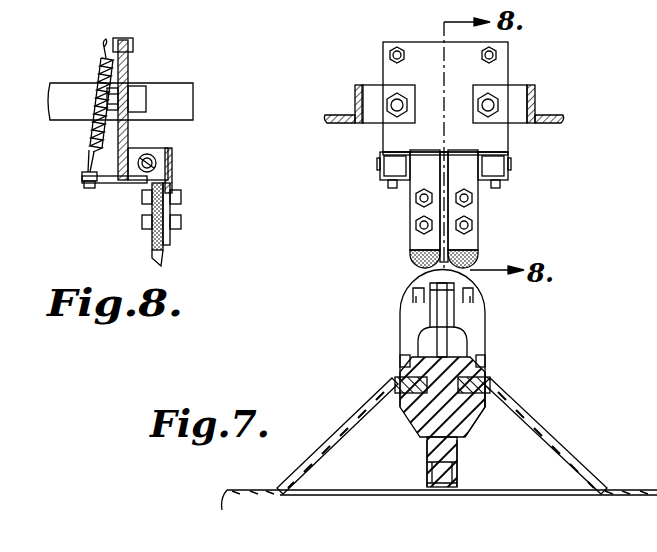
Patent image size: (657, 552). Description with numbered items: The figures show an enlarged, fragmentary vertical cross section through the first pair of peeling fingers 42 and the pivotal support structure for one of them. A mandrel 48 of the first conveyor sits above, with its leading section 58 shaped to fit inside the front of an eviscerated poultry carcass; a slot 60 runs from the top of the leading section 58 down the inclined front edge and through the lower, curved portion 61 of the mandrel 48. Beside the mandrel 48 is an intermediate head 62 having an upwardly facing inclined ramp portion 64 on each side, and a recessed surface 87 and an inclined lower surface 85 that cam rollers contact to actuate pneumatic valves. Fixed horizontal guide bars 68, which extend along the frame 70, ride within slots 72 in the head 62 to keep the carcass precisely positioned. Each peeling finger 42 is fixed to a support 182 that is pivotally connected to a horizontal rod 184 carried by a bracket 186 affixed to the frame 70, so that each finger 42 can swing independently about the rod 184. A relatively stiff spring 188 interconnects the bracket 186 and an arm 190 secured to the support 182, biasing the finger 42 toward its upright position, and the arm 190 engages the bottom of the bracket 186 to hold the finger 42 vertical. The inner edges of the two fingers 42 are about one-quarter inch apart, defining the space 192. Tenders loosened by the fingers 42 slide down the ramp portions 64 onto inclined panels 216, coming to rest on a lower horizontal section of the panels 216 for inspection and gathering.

In FIG. 8, the peeling fingers 42 is at (150, 258).
In FIG. 7, the peeling fingers 42 is at (416, 258).
In FIG. 7, the mandrel 48 is at (382, 289).
In FIG. 7, the leading section 58 is at (476, 292).
In FIG. 7, the slot 60 is at (447, 315).
In FIG. 7, the lower curved portion 61 is at (425, 335).
In FIG. 7, the intermediate head 62 is at (498, 362).
In FIG. 7, the inclined ramp portion 64 is at (404, 360).
In FIG. 7, the guide bars 68 is at (492, 388).
In FIG. 8, the frame 70 is at (182, 90).
In FIG. 7, the frame 70 is at (356, 102).
In FIG. 7, the slot 72 is at (472, 402).
In FIG. 7, the inclined lower surface 85 is at (407, 430).
In FIG. 7, the recessed surface 87 is at (414, 412).
In FIG. 8, the support 182 is at (172, 180).
In FIG. 7, the support 182 is at (410, 203).
In FIG. 8, the horizontal rod 184 is at (152, 156).
In FIG. 7, the horizontal rod 184 is at (510, 166).
In FIG. 8, the bracket 186 is at (128, 72).
In FIG. 7, the bracket 186 is at (508, 68).
In FIG. 8, the spring 188 is at (83, 133).
In FIG. 8, the arm 190 is at (108, 186).
In FIG. 7, the arm 190 is at (381, 182).
In FIG. 7, the space 192 is at (440, 212).
In FIG. 7, the panels 216 is at (572, 455).